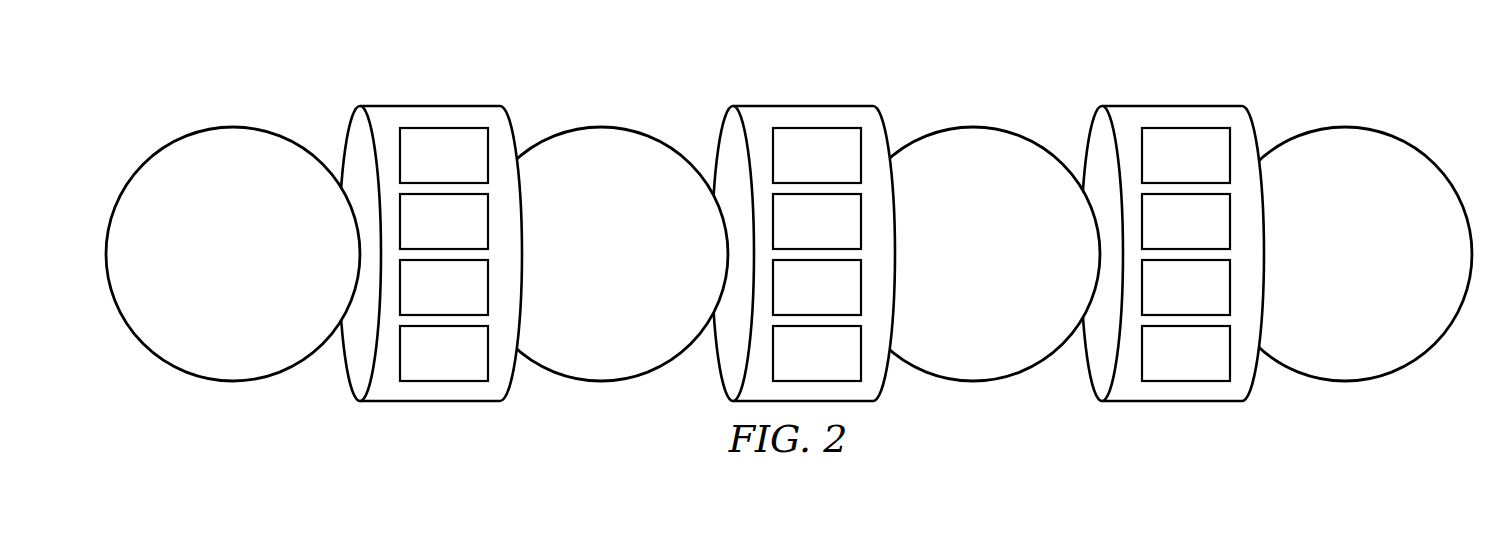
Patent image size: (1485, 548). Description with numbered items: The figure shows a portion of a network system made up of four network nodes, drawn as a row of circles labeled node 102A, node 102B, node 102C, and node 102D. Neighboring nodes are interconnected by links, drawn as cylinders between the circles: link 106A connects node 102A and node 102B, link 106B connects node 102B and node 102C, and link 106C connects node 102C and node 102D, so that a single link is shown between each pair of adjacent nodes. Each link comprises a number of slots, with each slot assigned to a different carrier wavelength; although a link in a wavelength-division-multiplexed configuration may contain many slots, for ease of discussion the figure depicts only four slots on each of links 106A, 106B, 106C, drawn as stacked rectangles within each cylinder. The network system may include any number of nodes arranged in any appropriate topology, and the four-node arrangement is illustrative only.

The node 102A is at (206, 270).
The node 102B is at (574, 270).
The node 102C is at (946, 270).
The node 102D is at (1318, 270).
The link 106A is at (393, 105).
The link 106B is at (763, 105).
The link 106C is at (1206, 105).